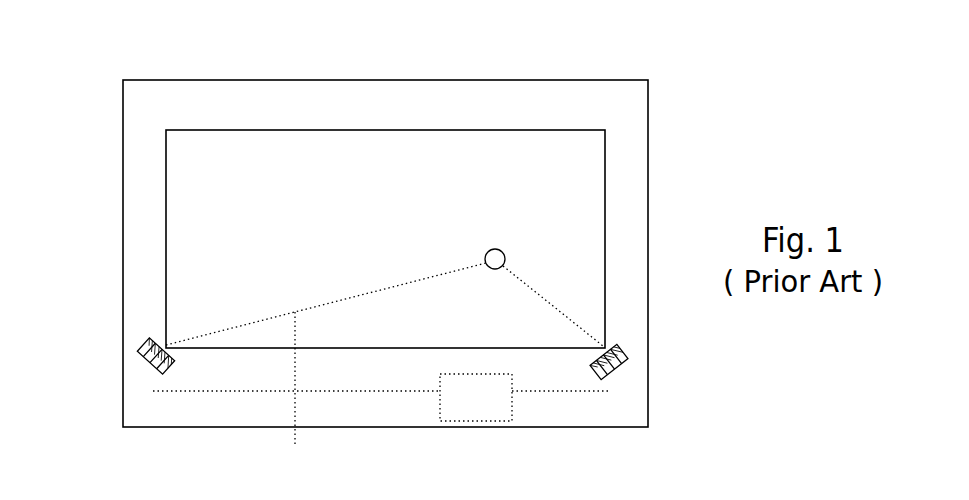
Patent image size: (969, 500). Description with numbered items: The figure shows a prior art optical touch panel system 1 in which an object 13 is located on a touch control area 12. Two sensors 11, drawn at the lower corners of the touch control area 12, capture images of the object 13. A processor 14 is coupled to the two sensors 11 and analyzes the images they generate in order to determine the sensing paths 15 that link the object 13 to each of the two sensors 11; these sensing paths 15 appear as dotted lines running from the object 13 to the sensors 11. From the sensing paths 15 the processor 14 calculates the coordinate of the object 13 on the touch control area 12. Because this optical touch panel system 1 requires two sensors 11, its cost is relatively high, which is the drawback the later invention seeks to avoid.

The optical touch panel system 1 is at (113, 52).
The sensors 11 is at (143, 346).
The touch control area 12 is at (390, 137).
The object 13 is at (505, 256).
The processor 14 is at (475, 421).
The sensing paths 15 is at (555, 301).